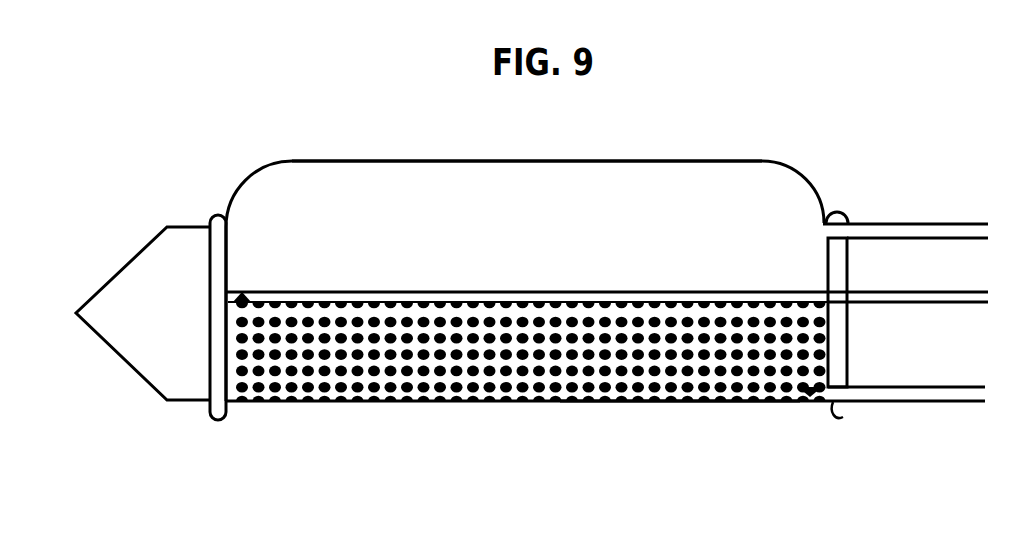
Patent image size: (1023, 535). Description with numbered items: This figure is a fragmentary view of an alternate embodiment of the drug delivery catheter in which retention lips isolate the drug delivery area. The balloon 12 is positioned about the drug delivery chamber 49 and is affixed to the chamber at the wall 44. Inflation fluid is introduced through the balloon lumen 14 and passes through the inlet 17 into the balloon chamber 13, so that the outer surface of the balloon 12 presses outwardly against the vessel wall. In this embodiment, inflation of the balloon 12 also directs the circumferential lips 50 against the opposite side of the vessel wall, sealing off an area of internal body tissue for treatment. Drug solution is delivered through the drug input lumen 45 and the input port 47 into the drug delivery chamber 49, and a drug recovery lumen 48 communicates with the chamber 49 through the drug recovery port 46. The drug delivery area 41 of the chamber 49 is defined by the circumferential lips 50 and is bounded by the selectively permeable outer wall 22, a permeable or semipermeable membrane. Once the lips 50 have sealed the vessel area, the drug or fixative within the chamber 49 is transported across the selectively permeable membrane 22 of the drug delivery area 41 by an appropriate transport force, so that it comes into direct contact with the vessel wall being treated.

The balloon 12 is at (697, 163).
The balloon chamber 13 is at (403, 176).
The balloon lumen 14 is at (855, 234).
The inlet 17 is at (826, 220).
The selectively permeable outer wall 22 is at (682, 403).
The drug delivery area 41 is at (488, 403).
The wall 44 is at (960, 231).
The drug input lumen 45 is at (955, 298).
The drug recovery port 46 is at (798, 397).
The input port 47 is at (218, 216).
The drug recovery lumen 48 is at (962, 394).
The drug delivery chamber 49 is at (422, 333).
The circumferential lips 50 is at (843, 417).